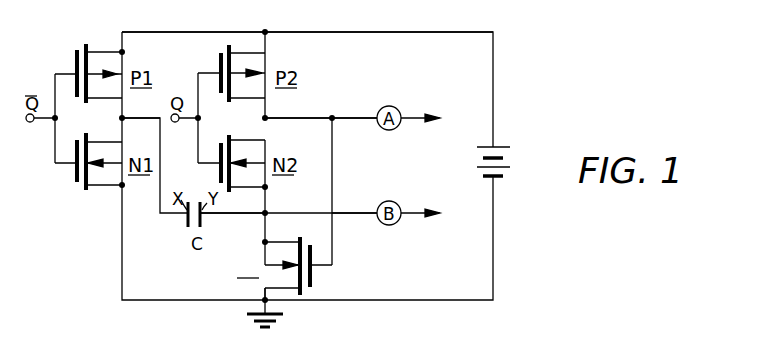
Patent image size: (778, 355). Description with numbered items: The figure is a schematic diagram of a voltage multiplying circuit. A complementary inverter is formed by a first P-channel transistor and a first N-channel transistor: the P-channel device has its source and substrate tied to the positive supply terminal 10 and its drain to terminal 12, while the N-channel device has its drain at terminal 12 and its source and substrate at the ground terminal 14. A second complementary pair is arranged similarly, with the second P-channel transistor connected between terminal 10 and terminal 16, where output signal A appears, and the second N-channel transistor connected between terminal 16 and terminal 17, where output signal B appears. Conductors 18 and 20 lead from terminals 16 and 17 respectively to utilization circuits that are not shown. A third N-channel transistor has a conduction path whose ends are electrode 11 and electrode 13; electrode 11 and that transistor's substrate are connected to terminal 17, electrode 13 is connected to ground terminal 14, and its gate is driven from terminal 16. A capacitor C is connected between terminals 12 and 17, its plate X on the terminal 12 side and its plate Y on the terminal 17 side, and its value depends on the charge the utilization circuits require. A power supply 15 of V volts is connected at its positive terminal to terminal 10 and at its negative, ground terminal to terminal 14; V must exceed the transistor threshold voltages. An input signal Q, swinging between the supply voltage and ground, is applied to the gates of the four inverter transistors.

The terminal 10 is at (263, 30).
The electrode 11 is at (288, 237).
The terminal 12 is at (126, 116).
The electrode 13 is at (286, 289).
The ground terminal 14 is at (258, 313).
The power supply 15 is at (490, 147).
The terminal 16 is at (268, 116).
The terminal 17 is at (268, 211).
The conductor 18 is at (343, 117).
The conductor 20 is at (343, 212).